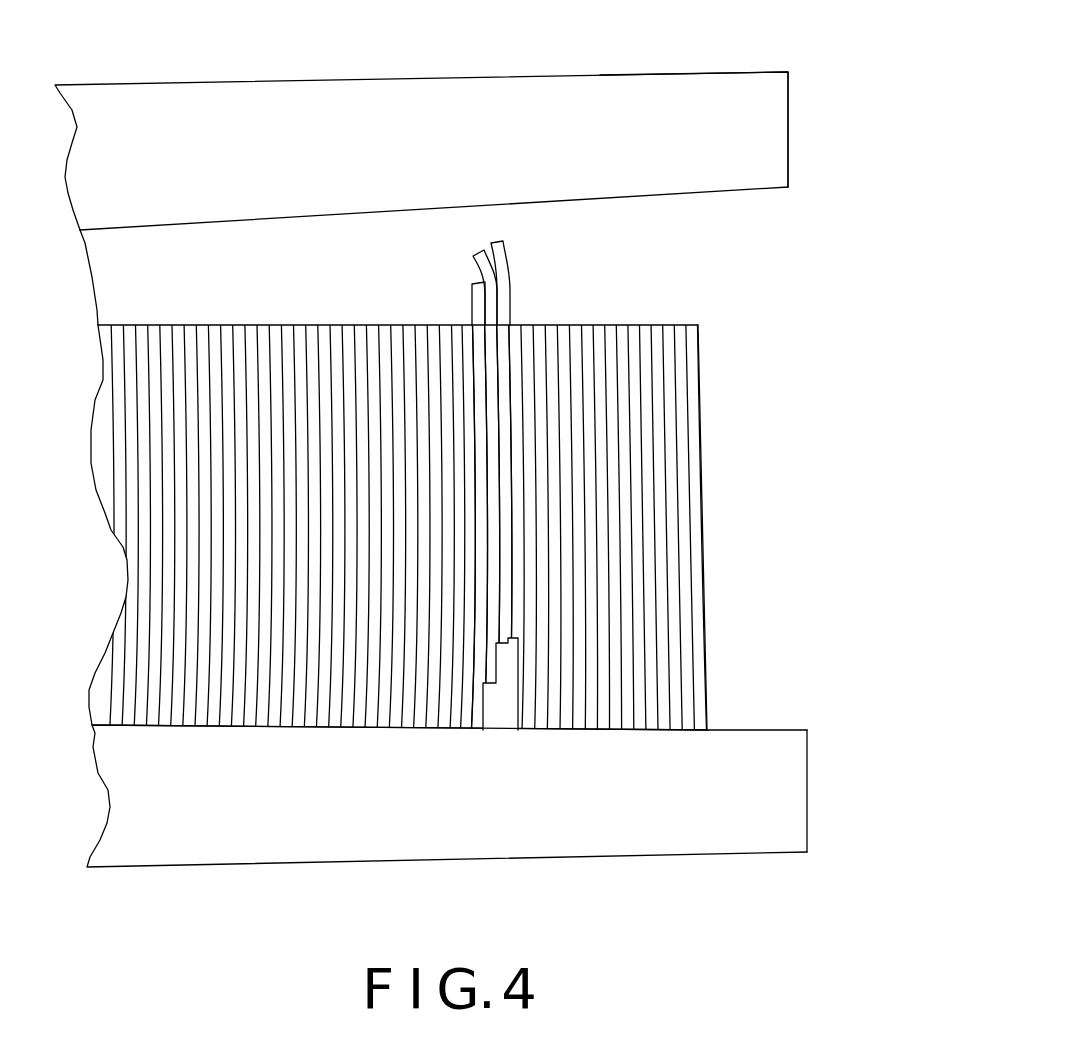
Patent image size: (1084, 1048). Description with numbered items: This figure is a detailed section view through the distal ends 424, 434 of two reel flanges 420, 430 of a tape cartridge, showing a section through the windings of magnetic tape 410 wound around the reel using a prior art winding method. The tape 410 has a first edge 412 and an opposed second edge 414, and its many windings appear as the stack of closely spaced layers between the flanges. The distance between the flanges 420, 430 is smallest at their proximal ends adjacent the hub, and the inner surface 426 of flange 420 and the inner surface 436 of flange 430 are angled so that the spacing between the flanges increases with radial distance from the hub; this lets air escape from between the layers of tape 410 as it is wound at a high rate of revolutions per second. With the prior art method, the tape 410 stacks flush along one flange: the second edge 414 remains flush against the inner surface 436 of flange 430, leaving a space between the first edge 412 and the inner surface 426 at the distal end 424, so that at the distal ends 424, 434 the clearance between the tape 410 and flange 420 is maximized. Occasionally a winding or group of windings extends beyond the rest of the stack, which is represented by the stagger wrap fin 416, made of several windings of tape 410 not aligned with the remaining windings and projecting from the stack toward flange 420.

The tape 410 is at (700, 430).
The first edge 412 is at (550, 325).
The second edge 414 is at (497, 728).
The stagger wrap fin 416 is at (505, 270).
The flange 420 is at (94, 103).
The distal end 424 is at (761, 100).
The inner surface 426 is at (730, 190).
The flange 430 is at (133, 847).
The distal end 434 is at (798, 803).
The inner surface 436 is at (762, 730).